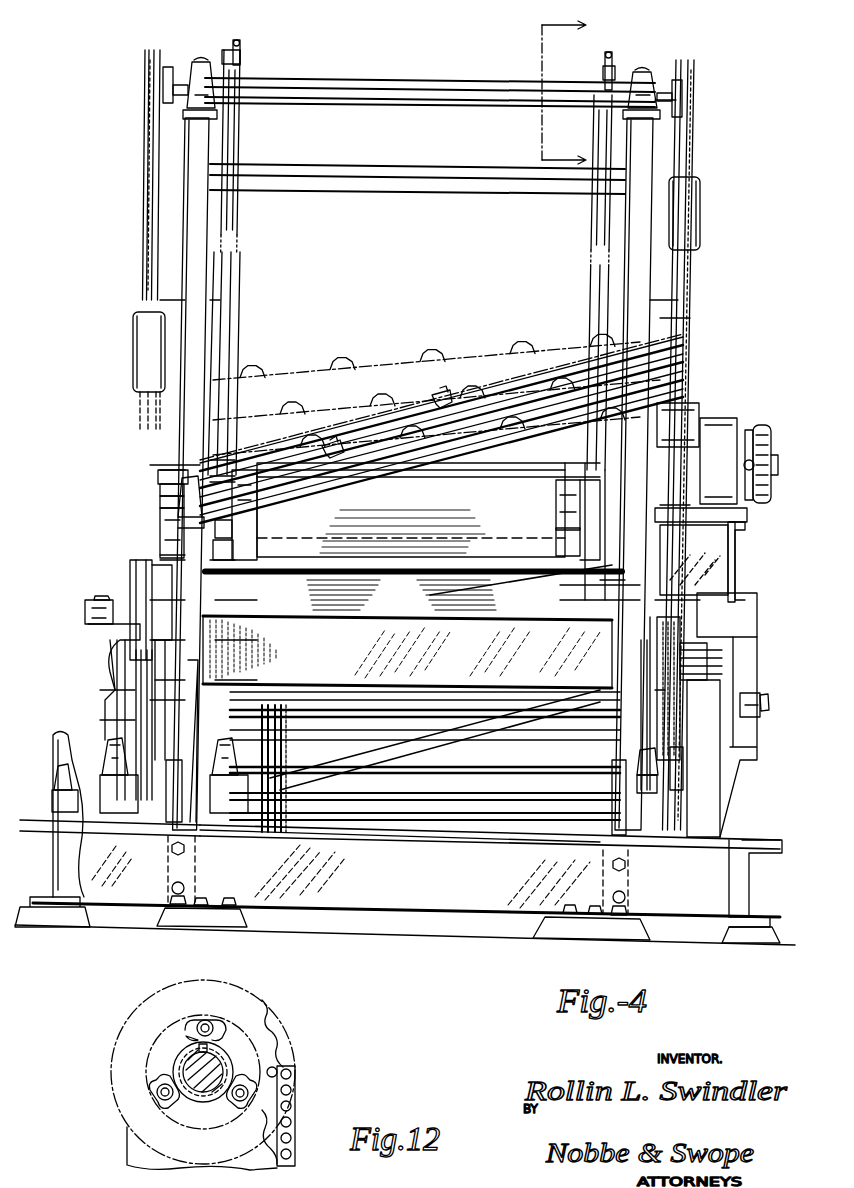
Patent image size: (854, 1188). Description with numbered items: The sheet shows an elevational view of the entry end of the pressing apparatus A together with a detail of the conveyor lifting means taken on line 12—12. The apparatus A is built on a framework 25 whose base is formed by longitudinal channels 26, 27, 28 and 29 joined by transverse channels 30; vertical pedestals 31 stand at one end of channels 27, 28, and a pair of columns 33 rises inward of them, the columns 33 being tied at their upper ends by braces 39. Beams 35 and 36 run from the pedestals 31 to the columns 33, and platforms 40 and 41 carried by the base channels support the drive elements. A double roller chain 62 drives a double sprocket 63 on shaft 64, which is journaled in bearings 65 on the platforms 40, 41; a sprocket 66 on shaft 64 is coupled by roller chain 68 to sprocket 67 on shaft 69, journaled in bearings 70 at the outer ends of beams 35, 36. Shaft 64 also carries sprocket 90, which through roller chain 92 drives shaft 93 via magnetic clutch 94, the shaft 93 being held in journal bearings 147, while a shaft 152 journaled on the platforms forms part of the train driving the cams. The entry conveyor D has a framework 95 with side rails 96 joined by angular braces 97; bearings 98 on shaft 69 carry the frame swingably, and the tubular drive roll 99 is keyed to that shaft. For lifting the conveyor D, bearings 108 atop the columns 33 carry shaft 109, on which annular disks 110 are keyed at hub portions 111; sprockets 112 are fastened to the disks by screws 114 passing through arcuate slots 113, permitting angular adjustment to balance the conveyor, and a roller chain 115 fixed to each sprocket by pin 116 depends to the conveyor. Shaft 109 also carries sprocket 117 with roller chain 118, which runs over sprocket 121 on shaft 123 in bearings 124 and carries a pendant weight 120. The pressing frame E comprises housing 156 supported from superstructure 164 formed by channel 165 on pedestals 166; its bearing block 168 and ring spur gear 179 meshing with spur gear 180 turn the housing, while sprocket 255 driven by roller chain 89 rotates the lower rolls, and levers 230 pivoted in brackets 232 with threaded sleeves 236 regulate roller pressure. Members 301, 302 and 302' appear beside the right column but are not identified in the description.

In FIG. 4, the pressing apparatus A is at (140, 218).
In FIG. 4, the entry conveyor D is at (368, 490).
In FIG. 4, the pressing frame E is at (316, 372).
In FIG. 4, the section line 12 is at (592, 55).
In FIG. 4, the framework 25 is at (342, 880).
In FIG. 4, the longitudinal channel 26 is at (52, 866).
In FIG. 4, the longitudinal channel 27 is at (197, 878).
In FIG. 4, the longitudinal channel 28 is at (624, 880).
In FIG. 4, the longitudinal channel 29 is at (750, 881).
In FIG. 4, the transverse channel 30 is at (396, 882).
In FIG. 4, the pedestal 31 is at (185, 775).
In FIG. 4, the column 33 is at (196, 284).
In FIG. 12, the column 33 is at (140, 1150).
In FIG. 4, the beam 35 is at (200, 568).
In FIG. 4, the beam 36 is at (618, 585).
In FIG. 4, the brace 39 is at (396, 182).
In FIG. 4, the platform 40 is at (128, 828).
In FIG. 4, the platform 41 is at (720, 835).
In FIG. 4, the double roller chain 62 is at (290, 765).
In FIG. 4, the double sprocket 63 is at (250, 760).
In FIG. 4, the shaft 64 is at (355, 767).
In FIG. 4, the bearing 65 is at (116, 758).
In FIG. 4, the sprocket 66 is at (150, 745).
In FIG. 4, the sprocket 67 is at (160, 495).
In FIG. 4, the roller chain 68 is at (168, 503).
In FIG. 4, the shaft 69 is at (166, 512).
In FIG. 4, the bearing 70 is at (160, 478).
In FIG. 4, the roller chain 89 is at (765, 428).
In FIG. 4, the sprocket 90 is at (683, 778).
In FIG. 4, the roller chain 92 is at (680, 750).
In FIG. 4, the shaft 93 is at (769, 702).
In FIG. 4, the magnetic clutch 94 is at (718, 662).
In FIG. 4, the conveyor framework 95 is at (236, 530).
In FIG. 4, the side rail 96 is at (236, 544).
In FIG. 4, the brace 97 is at (482, 570).
In FIG. 4, the bearing 98 is at (257, 491).
In FIG. 4, the tubular drive roll 99 is at (560, 498).
In FIG. 4, the bearing 108 is at (201, 62).
In FIG. 4, the shaft 109 is at (368, 84).
In FIG. 12, the shaft 109 is at (213, 1072).
In FIG. 4, the annular disk 110 is at (228, 50).
In FIG. 12, the annular disk 110 is at (250, 1030).
In FIG. 12, the hub portion 111 is at (228, 1062).
In FIG. 4, the sprocket 112 is at (240, 66).
In FIG. 12, the sprocket 112 is at (292, 1072).
In FIG. 12, the arcuate slot 113 is at (216, 1025).
In FIG. 12, the screw 114 is at (206, 1026).
In FIG. 4, the roller chain 115 is at (241, 216).
In FIG. 12, the roller chain 115 is at (296, 1130).
In FIG. 12, the pin 116 is at (292, 1088).
In FIG. 4, the sprocket 117 is at (165, 98).
In FIG. 4, the roller chain 118 is at (150, 162).
In FIG. 4, the weight 120 is at (135, 344).
In FIG. 4, the sprocket 121 is at (135, 600).
In FIG. 4, the shaft 123 is at (96, 597).
In FIG. 4, the bearing 124 is at (85, 610).
In FIG. 4, the journal bearing 147 is at (752, 693).
In FIG. 4, the shaft 152 is at (430, 800).
In FIG. 4, the housing 156 is at (272, 372).
In FIG. 4, the superstructure 164 is at (745, 541).
In FIG. 4, the channel 165 is at (745, 566).
In FIG. 4, the pedestal 166 is at (745, 620).
In FIG. 4, the block 168 is at (720, 440).
In FIG. 4, the ring spur gear 179 is at (695, 420).
In FIG. 4, the spur gear 180 is at (748, 514).
In FIG. 4, the lever 230 is at (540, 378).
In FIG. 4, the bracket 232 is at (336, 458).
In FIG. 4, the threaded sleeve 236 is at (444, 392).
In FIG. 4, the sprocket 255 is at (751, 455).
In FIG. 4, the rod 301 is at (691, 165).
In FIG. 4, the bracket 302 is at (702, 98).
In FIG. 4, the damper 302' is at (711, 213).